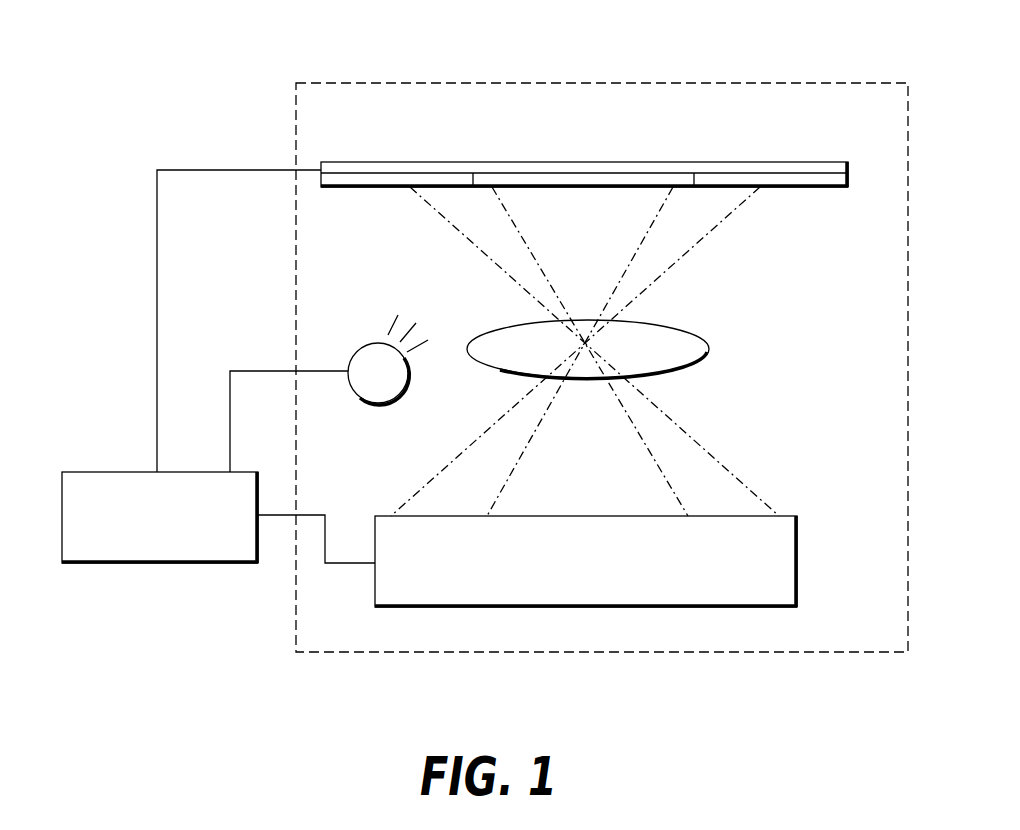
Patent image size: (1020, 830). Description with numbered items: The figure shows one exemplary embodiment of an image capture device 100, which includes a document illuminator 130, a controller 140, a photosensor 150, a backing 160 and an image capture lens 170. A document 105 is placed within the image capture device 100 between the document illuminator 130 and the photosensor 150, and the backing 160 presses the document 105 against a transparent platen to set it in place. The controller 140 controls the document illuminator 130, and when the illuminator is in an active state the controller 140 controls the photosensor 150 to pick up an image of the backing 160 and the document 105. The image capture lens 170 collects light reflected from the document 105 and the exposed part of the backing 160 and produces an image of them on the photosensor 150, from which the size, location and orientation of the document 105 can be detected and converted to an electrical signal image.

The image capture device 100 is at (738, 93).
The document 105 is at (652, 178).
The document illuminator 130 is at (364, 369).
The controller 140 is at (210, 555).
The photosensor 150 is at (773, 530).
The backing 160 is at (812, 168).
The image capture lens 170 is at (672, 342).